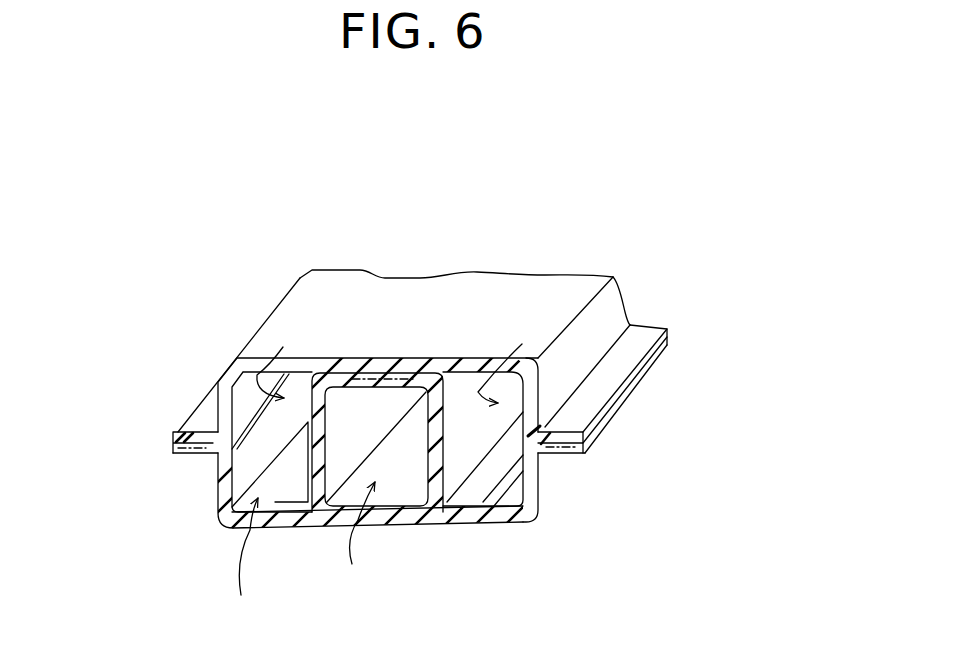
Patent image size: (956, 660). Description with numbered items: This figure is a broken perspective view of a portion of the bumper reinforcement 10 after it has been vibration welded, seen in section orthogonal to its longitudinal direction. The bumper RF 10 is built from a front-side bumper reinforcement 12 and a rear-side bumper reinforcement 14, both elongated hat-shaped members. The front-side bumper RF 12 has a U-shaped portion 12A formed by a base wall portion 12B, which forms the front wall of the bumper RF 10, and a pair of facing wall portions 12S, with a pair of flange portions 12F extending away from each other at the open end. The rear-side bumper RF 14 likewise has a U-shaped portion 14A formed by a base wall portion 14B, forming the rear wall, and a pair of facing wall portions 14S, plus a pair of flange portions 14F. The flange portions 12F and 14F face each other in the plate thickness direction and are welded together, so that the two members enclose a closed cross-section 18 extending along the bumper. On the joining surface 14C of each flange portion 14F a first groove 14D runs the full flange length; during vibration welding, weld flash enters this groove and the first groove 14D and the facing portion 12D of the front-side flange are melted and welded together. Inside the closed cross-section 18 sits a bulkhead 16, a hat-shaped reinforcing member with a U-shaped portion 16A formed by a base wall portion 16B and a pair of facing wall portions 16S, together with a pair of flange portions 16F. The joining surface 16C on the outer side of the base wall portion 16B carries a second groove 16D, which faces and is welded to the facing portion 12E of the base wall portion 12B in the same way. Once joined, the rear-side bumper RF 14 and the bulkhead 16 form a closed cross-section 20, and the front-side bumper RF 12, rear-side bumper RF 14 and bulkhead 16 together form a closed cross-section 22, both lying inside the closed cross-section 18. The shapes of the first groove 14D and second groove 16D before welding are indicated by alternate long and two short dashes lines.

The bumper reinforcement 10 is at (540, 240).
The front-side bumper reinforcement 12 is at (426, 290).
The U-shaped portion 12A is at (613, 292).
The base wall portion 12B is at (493, 282).
The facing portion 12D is at (190, 458).
The facing portion 12E is at (420, 440).
The flange portion 12F is at (637, 324).
The facing wall portion 12S is at (545, 377).
The rear-side bumper reinforcement 14 is at (412, 534).
The U-shaped portion 14A is at (588, 452).
The base wall portion 14B is at (462, 528).
The joining surface 14C is at (180, 436).
The first groove 14D is at (182, 432).
The flange portion 14F is at (184, 460).
The facing wall portion 14S is at (578, 455).
The bulkhead 16 is at (454, 396).
The U-shaped portion 16A is at (306, 406).
The base wall portion 16B is at (413, 359).
The joining surface 16C is at (347, 360).
The second groove 16D is at (378, 374).
The flange portion 16F is at (298, 488).
The facing wall portion 16S is at (400, 452).
The closed cross-section 18 is at (256, 621).
The closed cross-section 20 is at (369, 592).
The closed cross-section 22 is at (541, 338).